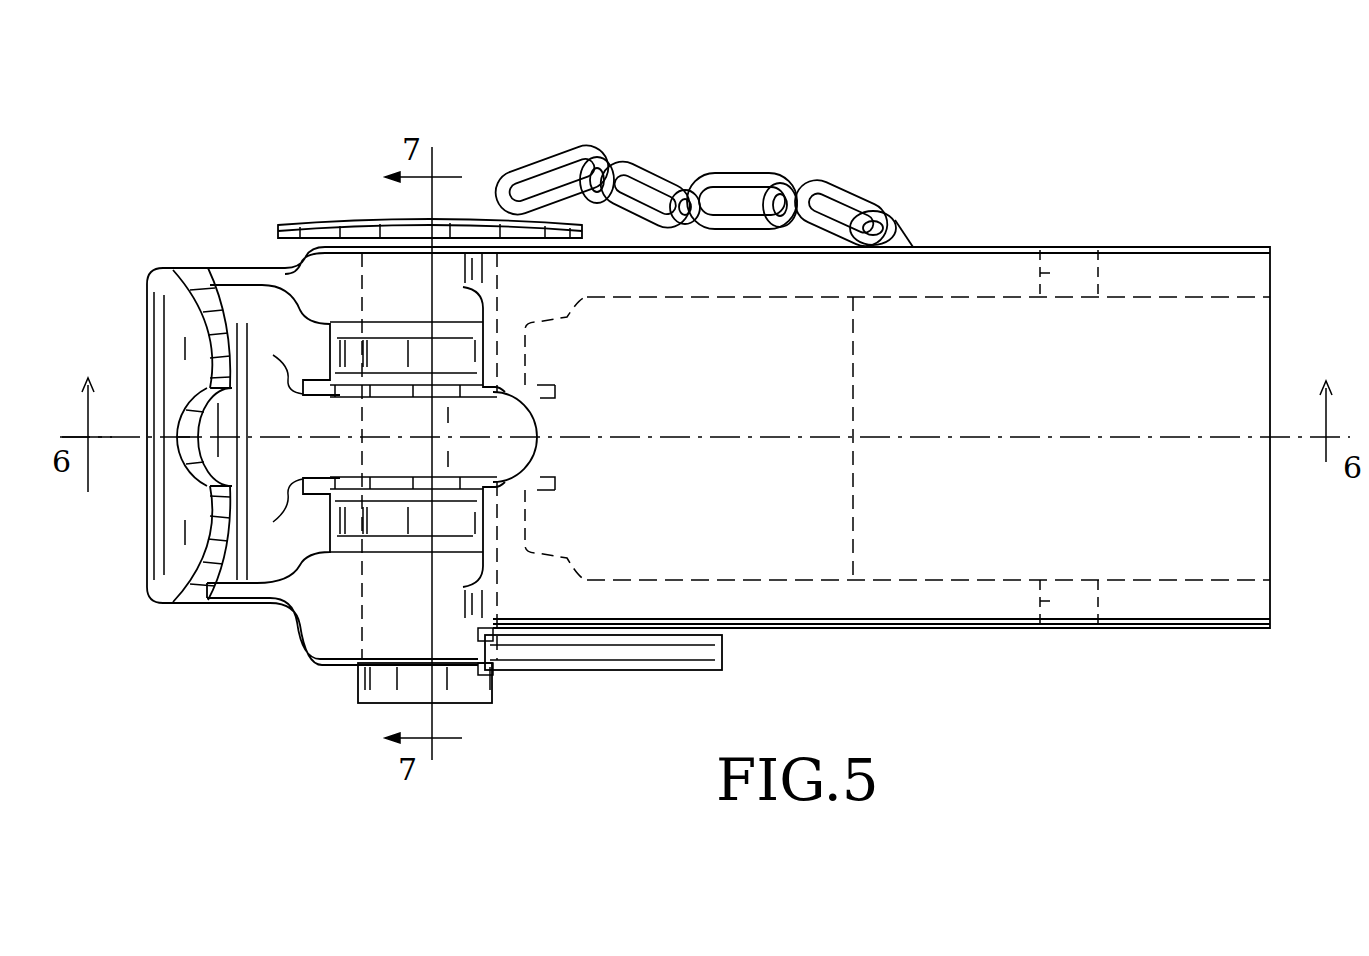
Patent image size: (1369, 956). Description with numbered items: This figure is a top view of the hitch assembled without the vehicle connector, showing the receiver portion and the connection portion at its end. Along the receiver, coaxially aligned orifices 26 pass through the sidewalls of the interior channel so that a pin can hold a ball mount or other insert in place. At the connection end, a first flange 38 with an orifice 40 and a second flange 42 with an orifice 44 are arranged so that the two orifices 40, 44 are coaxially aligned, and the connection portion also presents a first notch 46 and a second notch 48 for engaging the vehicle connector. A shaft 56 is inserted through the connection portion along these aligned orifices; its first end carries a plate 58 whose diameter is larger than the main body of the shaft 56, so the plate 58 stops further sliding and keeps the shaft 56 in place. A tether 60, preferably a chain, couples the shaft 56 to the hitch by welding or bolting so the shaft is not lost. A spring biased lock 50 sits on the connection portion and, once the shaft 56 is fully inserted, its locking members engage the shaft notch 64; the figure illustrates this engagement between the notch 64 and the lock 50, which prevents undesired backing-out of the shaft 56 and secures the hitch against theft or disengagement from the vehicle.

The orifices 26 is at (1047, 275).
The first flange 38 is at (275, 432).
The orifice 40 is at (385, 335).
The second flange 42 is at (292, 490).
The orifice 44 is at (395, 545).
The first notch 46 is at (537, 440).
The second notch 48 is at (192, 462).
The lock 50 is at (640, 658).
The shaft 56 is at (378, 695).
The plate 58 is at (325, 225).
The tether 60 is at (737, 185).
The shaft notch 64 is at (490, 663).